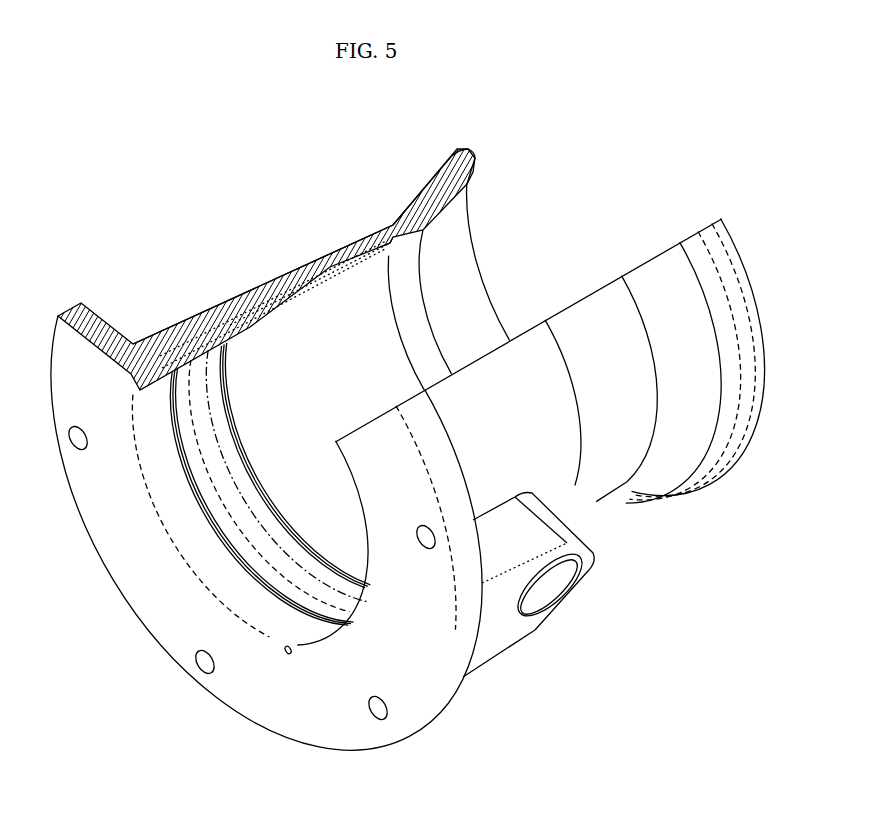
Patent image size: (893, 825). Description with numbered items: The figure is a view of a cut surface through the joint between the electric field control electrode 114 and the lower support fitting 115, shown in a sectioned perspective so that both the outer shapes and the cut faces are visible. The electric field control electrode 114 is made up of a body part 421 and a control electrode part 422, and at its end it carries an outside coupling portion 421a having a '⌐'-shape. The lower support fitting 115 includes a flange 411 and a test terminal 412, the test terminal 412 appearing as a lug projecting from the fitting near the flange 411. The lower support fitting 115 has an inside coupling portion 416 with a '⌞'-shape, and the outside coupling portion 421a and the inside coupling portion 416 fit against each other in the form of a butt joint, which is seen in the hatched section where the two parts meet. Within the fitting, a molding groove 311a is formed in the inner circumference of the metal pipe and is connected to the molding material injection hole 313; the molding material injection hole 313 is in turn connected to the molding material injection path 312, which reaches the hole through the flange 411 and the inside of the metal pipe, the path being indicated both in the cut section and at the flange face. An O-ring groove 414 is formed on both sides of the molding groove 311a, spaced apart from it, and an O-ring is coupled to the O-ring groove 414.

The electric field control electrode 114 is at (679, 519).
The lower support fitting 115 is at (474, 712).
The molding groove 311a is at (190, 378).
The molding material injection path 312 is at (157, 338).
The molding material injection hole 313 is at (202, 352).
The flange 411 is at (172, 660).
The test terminal 412 is at (547, 588).
The O-ring groove 414 is at (233, 548).
The inside coupling portion 416 is at (360, 293).
The body part 421 is at (417, 207).
The outside coupling portion 421a is at (362, 282).
The control electrode part 422 is at (447, 157).